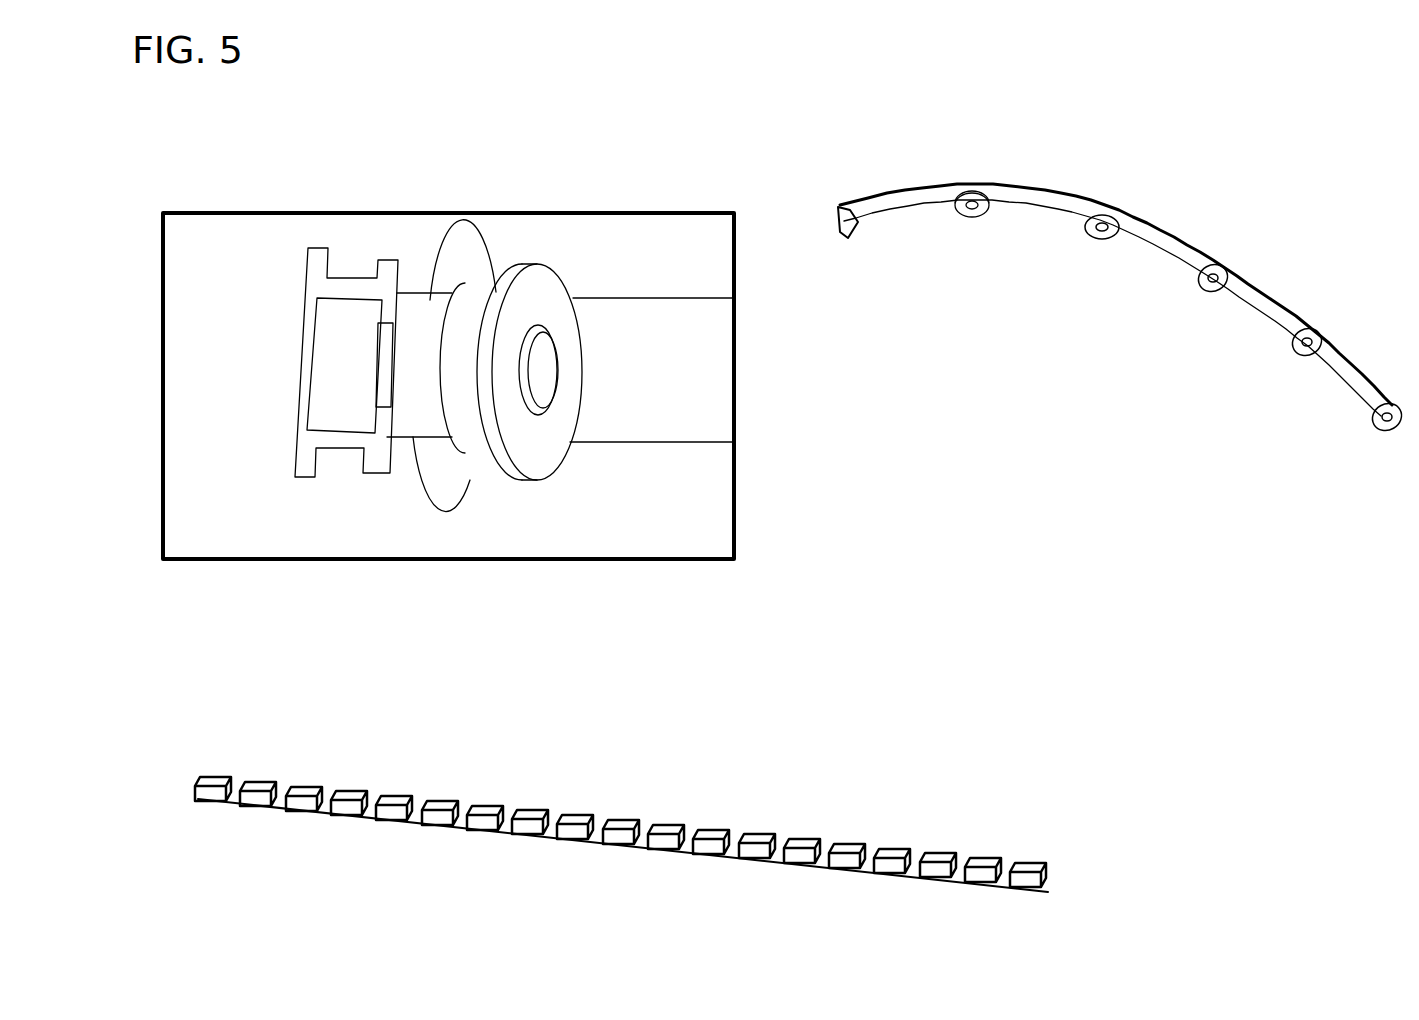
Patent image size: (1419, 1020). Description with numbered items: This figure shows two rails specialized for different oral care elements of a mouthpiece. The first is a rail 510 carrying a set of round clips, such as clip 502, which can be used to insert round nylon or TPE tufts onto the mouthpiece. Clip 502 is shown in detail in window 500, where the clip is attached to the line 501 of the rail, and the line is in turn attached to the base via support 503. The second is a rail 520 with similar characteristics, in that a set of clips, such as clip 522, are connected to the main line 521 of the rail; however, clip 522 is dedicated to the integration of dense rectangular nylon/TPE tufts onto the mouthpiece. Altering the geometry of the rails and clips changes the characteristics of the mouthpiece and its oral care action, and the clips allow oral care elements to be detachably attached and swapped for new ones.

The window 500 is at (248, 284).
The line 501 is at (408, 363).
The clip 502 is at (568, 353).
The support 503 is at (348, 443).
The rail 510 is at (1312, 194).
The rail 520 is at (697, 739).
The main line 521 is at (400, 823).
The clip 522 is at (577, 823).